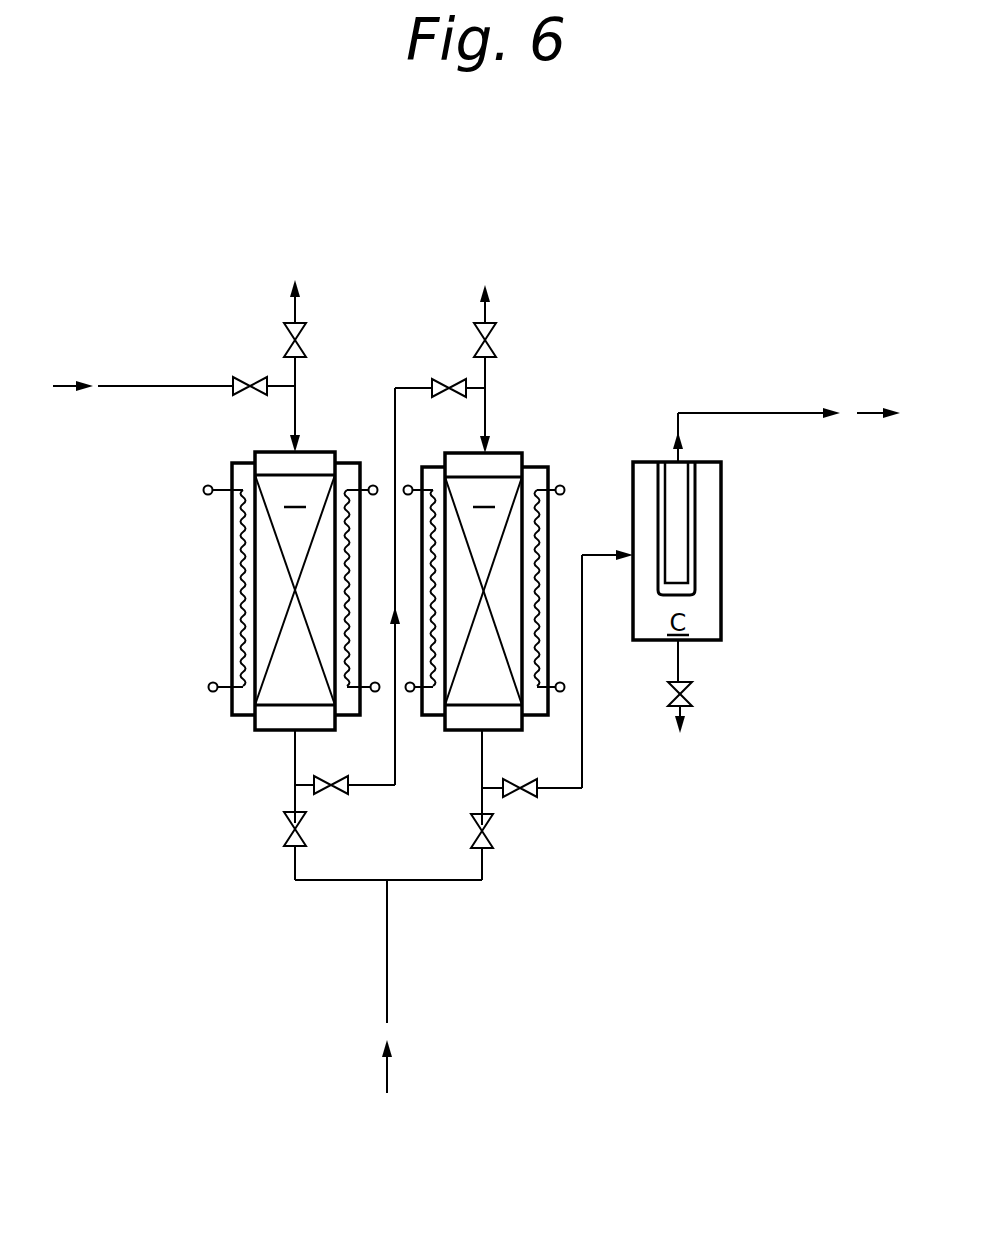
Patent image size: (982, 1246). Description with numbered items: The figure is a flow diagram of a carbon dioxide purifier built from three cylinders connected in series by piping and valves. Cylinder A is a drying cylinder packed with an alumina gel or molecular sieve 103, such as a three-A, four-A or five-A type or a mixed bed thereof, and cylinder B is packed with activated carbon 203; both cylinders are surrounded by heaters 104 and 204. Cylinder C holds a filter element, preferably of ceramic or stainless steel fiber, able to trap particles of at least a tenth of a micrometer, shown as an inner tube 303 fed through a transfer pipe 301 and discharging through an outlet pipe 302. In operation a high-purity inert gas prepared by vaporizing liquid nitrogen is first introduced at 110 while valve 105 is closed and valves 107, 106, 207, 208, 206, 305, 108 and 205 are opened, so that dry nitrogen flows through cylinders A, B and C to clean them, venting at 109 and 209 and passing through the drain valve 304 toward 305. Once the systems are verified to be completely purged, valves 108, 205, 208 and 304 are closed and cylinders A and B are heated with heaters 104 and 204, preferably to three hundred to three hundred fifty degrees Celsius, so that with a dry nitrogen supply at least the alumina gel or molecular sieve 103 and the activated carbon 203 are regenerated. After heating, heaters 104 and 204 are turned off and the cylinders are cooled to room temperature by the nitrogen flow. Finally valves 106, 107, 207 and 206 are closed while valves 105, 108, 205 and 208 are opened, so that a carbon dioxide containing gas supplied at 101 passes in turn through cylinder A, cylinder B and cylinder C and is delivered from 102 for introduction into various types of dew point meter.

The CO2 containing gas supply point 101 is at (135, 405).
The purified gas delivery point 102 is at (884, 432).
The alumina gel or molecular sieve 103 is at (270, 585).
The heater 104 is at (240, 655).
The valve 105 is at (240, 397).
The valve 106 is at (306, 347).
The valve 107 is at (282, 816).
The valve 108 is at (328, 795).
The vent stream from reactor A 109 is at (298, 282).
The inert gas introduction point 110 is at (388, 1006).
The activated carbon 203 is at (490, 530).
The heater 204 is at (436, 720).
The valve 205 is at (447, 398).
The valve 206 is at (496, 347).
The valve 207 is at (471, 830).
The valve 208 is at (530, 797).
The vent stream from reactor B 209 is at (494, 281).
The transfer pipe to vessel C 301 is at (602, 558).
The outlet pipe of vessel C 302 is at (680, 456).
The inner tube of vessel C 303 is at (696, 542).
The valve 304 is at (692, 698).
The valve 305 is at (686, 741).